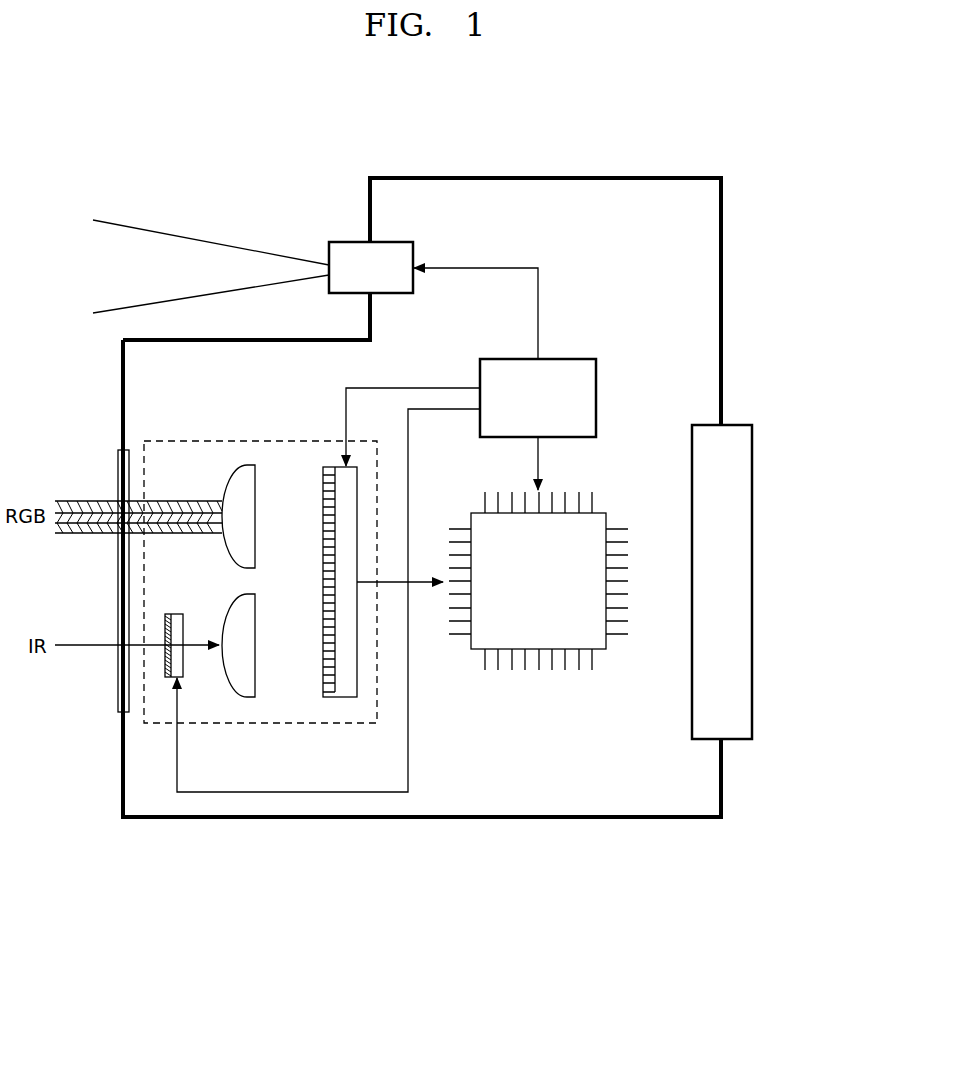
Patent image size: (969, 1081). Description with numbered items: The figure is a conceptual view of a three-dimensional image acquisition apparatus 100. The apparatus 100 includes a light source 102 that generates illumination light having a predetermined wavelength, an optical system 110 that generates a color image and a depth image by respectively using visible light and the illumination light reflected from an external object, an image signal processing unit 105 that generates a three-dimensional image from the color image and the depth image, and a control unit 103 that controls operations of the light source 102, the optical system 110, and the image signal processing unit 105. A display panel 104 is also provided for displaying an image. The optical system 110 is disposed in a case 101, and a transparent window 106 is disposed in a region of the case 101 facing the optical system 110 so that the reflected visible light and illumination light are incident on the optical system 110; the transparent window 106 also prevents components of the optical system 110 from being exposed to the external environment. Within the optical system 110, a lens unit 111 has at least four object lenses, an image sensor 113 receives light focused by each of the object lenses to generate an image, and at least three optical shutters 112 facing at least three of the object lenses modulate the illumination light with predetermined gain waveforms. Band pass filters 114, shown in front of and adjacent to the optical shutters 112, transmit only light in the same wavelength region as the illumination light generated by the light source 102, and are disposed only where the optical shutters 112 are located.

The 3D image acquisition apparatus 100 is at (433, 824).
The case 101 is at (671, 178).
The light source 102 is at (349, 242).
The control unit 103 is at (596, 398).
The display panel 104 is at (752, 449).
The image signal processing unit 105 is at (601, 650).
The transparent window 106 is at (118, 695).
The optical system 110 is at (357, 724).
The lens unit 111 is at (240, 697).
The optical shutters 112 is at (177, 614).
The image sensor 113 is at (330, 692).
The band pass filters 114 is at (167, 635).